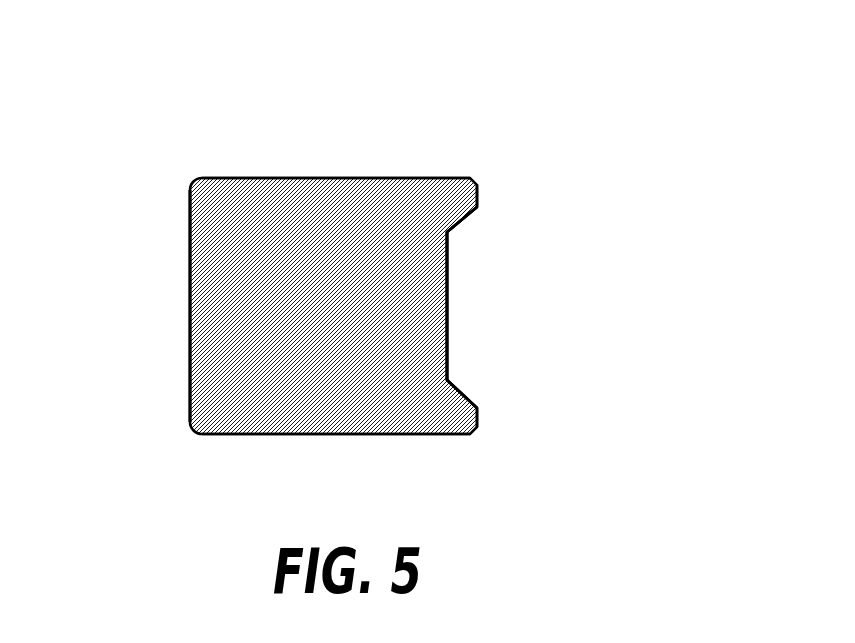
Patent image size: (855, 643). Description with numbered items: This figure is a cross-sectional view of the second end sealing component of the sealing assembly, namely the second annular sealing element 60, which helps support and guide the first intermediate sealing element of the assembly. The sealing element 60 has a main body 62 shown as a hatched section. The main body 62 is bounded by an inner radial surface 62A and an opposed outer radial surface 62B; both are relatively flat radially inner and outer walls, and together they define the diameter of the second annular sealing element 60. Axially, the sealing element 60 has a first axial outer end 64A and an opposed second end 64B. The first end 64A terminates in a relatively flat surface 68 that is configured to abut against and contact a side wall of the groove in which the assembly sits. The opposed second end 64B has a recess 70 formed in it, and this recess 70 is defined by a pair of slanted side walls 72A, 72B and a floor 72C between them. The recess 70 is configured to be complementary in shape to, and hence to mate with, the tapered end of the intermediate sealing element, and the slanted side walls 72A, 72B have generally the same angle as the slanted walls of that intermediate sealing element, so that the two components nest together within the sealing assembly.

The second annular sealing element 60 is at (374, 227).
The main body 62 is at (226, 172).
The inner radial surface 62A is at (253, 435).
The outer radial surface 62B is at (310, 178).
The first axial outer end 64A is at (167, 198).
The second end 64B is at (618, 190).
The flat surface 68 is at (190, 333).
The recess 70 is at (507, 320).
The slanted side wall 72A is at (460, 395).
The slanted side wall 72B is at (462, 224).
The floor 72C is at (455, 292).